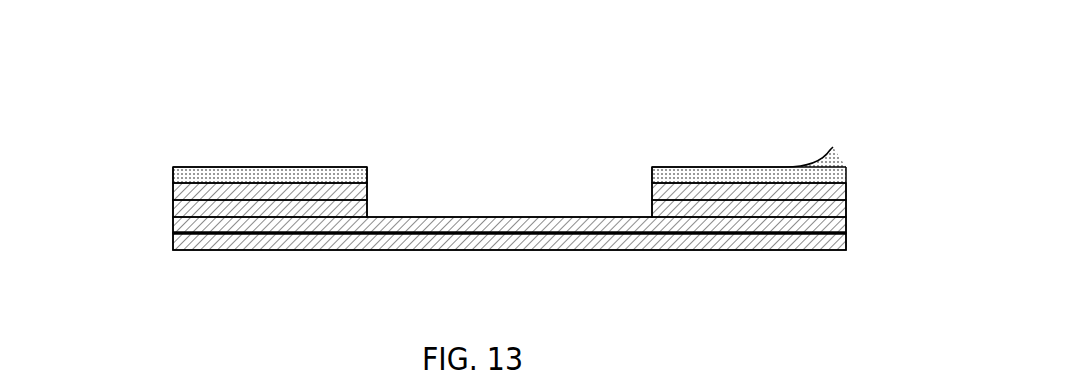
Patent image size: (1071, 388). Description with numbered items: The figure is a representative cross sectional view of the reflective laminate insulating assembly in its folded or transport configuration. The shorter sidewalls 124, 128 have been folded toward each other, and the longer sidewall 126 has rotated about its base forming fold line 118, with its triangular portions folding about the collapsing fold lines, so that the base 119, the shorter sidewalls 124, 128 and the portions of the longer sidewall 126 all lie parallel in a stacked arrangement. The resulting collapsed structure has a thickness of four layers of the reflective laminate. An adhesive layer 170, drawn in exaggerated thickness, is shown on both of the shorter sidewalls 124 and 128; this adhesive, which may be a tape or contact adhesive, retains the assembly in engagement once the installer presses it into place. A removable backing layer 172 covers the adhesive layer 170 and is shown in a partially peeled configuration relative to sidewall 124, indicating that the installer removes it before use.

The base forming fold line 118 is at (173, 233).
The base 119 is at (227, 243).
The sidewall 124 is at (845, 183).
The sidewall 126 is at (193, 207).
The sidewall 128 is at (173, 183).
The adhesive layer 170 is at (173, 172).
The backing layer 172 is at (228, 167).